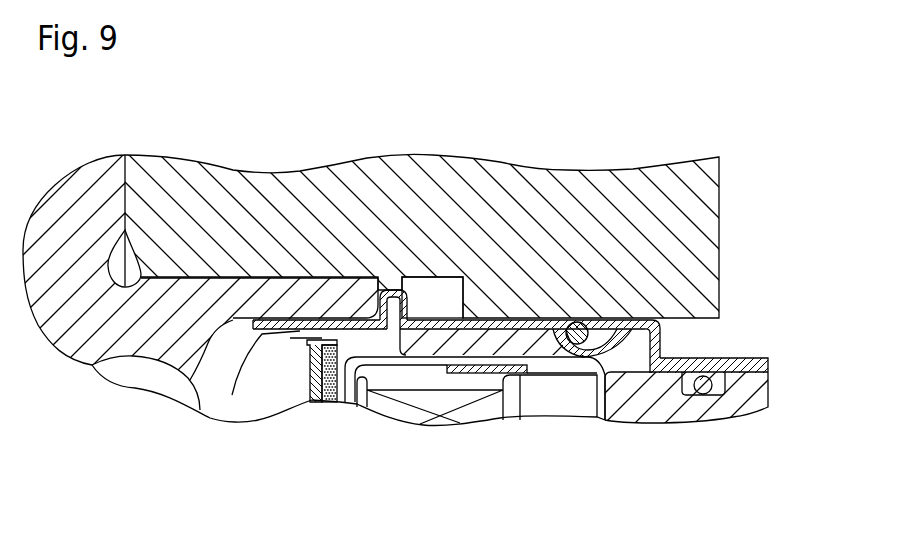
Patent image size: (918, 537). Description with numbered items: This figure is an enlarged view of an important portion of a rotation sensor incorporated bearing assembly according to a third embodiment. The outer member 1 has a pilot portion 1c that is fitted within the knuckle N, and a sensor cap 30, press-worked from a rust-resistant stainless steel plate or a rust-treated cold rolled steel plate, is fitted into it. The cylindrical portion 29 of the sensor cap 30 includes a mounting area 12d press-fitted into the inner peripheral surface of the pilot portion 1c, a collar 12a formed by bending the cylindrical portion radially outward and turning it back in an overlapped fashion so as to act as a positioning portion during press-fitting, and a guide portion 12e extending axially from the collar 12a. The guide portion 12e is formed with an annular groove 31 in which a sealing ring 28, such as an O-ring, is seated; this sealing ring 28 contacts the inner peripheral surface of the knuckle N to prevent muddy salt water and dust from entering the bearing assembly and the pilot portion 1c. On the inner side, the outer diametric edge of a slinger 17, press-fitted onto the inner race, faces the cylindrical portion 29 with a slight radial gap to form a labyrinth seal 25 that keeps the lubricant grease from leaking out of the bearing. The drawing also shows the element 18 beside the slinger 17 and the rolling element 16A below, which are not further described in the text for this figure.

The outer member 1 is at (459, 251).
The pilot portion 1c is at (254, 303).
The cylindrical portion 29 is at (507, 217).
The mounting area 12d is at (316, 320).
The collar 12a is at (400, 288).
The guide portion 12e is at (485, 318).
The sealing ring 28 is at (575, 322).
The knuckle N is at (637, 193).
The annular groove 31 is at (566, 323).
The sensor cap 30 is at (691, 355).
The labyrinth seal 25 is at (232, 395).
The slinger 17 is at (308, 398).
The magnetic encoder 18 is at (328, 405).
The rolling element 16A is at (443, 402).